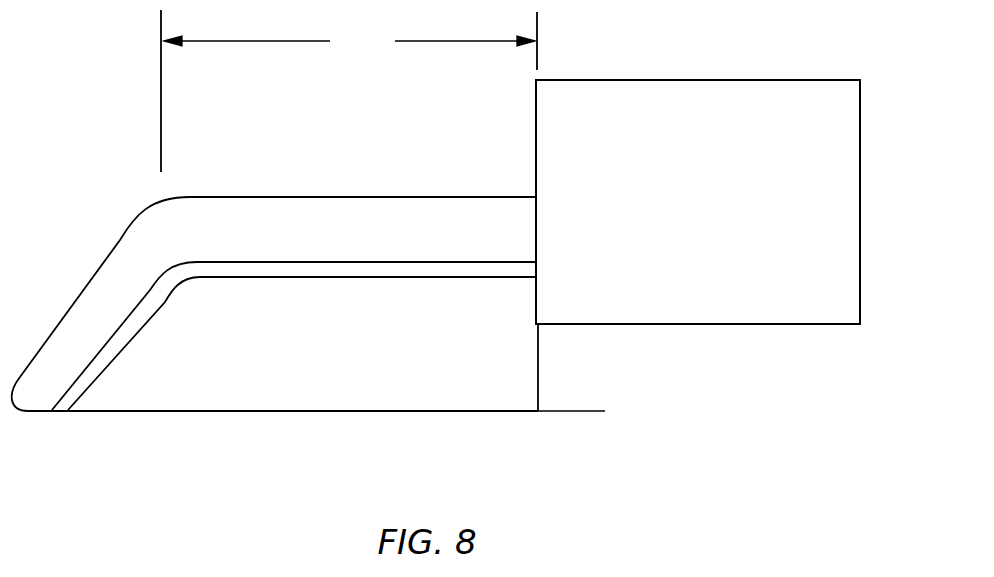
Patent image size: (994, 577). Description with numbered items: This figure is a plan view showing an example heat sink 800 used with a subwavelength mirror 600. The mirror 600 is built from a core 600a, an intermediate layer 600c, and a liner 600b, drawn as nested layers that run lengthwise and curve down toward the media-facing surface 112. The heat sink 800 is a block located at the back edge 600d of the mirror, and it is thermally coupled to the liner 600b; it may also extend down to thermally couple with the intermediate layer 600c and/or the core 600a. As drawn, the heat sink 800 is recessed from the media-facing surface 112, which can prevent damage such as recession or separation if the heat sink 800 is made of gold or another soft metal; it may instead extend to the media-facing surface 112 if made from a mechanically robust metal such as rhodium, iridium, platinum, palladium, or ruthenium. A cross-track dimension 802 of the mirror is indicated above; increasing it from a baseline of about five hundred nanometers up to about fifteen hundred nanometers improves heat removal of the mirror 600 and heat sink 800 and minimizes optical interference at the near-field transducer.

The heat sink 800 is at (653, 80).
The cross-track dimension 802 is at (349, 91).
The subwavelength mirror 600 is at (319, 281).
The core 600a is at (338, 407).
The liner 600b is at (331, 194).
The intermediate layer 600c is at (62, 412).
The back edge 600d is at (540, 378).
The media-facing surface 112 is at (567, 412).